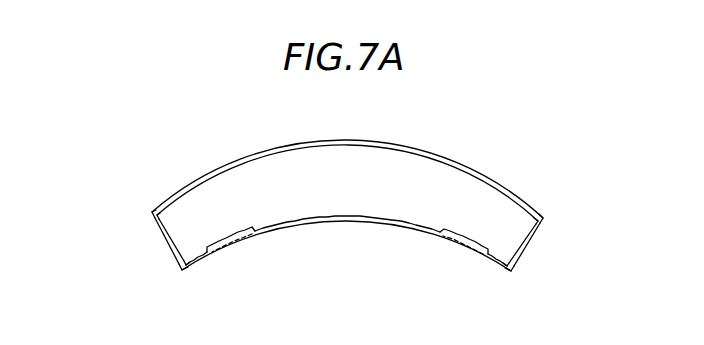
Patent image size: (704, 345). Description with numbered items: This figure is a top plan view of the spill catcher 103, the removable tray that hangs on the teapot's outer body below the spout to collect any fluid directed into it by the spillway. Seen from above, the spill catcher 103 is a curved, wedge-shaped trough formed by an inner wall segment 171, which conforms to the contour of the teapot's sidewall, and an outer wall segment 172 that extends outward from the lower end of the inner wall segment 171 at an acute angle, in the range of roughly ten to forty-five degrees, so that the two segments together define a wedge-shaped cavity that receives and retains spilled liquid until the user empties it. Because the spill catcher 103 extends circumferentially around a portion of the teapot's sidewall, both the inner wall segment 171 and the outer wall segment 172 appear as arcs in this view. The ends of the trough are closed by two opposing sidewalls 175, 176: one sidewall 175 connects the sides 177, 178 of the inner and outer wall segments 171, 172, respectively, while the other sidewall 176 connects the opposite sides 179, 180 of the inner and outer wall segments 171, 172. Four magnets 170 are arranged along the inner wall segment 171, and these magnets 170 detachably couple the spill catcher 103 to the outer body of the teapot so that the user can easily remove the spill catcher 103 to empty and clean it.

The spill catcher 103 is at (585, 145).
The magnets 170 is at (235, 249).
The inner wall segment 171 is at (347, 224).
The outer wall segment 172 is at (343, 142).
The sidewall 175 is at (531, 241).
The sidewall 176 is at (164, 240).
The side 177 is at (512, 274).
The side 178 is at (541, 216).
The opposite side 179 is at (180, 272).
The opposite side 180 is at (155, 214).